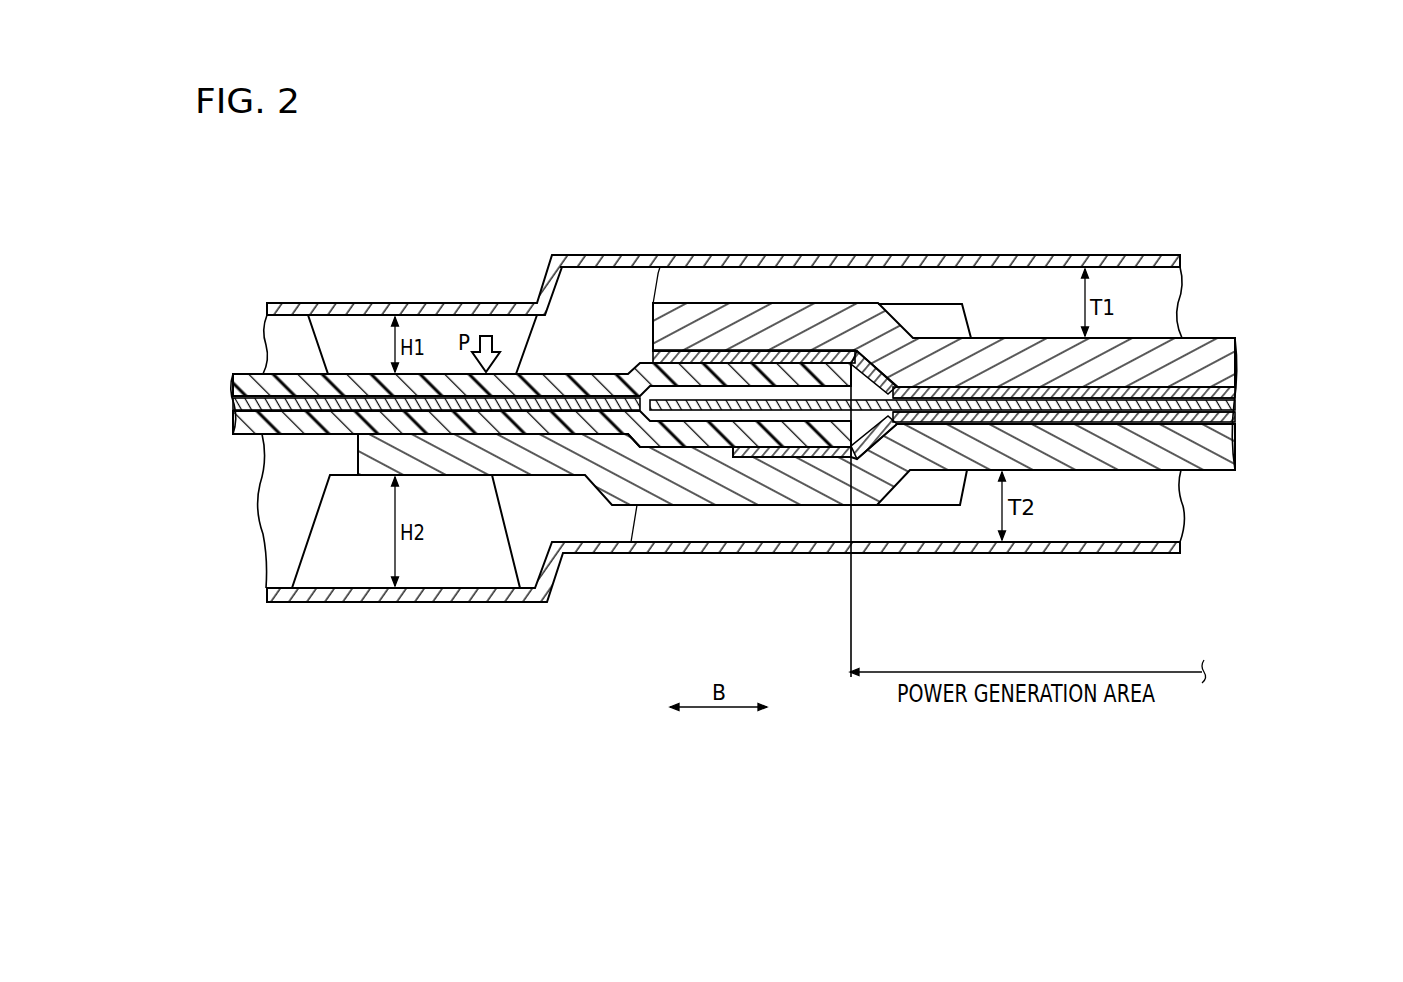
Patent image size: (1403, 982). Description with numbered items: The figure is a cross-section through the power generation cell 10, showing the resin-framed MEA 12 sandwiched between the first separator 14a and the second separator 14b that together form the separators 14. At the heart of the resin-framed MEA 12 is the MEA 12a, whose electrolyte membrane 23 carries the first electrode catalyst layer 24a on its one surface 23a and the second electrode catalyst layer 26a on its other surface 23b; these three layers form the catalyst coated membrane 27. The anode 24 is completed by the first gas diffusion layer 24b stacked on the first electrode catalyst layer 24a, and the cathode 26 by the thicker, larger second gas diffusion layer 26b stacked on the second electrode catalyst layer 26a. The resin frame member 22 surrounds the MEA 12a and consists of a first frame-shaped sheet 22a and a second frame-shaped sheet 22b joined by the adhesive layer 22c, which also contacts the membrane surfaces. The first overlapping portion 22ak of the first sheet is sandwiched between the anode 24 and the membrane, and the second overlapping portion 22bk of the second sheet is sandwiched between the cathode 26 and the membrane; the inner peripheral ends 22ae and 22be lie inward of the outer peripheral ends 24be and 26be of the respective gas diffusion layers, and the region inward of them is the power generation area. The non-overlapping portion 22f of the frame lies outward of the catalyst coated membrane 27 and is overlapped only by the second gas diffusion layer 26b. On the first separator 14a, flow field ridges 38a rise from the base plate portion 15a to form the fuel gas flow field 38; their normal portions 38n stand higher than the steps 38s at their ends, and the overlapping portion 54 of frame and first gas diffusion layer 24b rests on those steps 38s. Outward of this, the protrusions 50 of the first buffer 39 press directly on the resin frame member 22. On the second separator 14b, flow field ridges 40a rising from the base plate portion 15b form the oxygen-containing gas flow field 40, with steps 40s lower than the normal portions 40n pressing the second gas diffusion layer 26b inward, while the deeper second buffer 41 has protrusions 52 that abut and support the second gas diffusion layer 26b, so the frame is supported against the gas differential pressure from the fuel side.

The power generation cell 10 is at (250, 222).
The resin-framed MEA 12 is at (782, 416).
The MEA 12a is at (782, 416).
The separator 14 is at (723, 412).
The first separator 14a is at (940, 254).
The second separator 14b is at (443, 603).
The base plate portion 15a is at (689, 255).
The base plate portion 15b is at (670, 553).
The resin frame member 22 is at (566, 413).
The first frame-shaped sheet 22a is at (240, 383).
The second frame-shaped sheet 22b is at (240, 417).
The adhesive layer 22c is at (240, 404).
The non-overlapping portion 22f is at (440, 383).
The first overlapping portion 22ak is at (756, 372).
The second overlapping portion 22bk is at (727, 438).
The inner peripheral end 22ae is at (868, 370).
The inner peripheral end 22be is at (847, 443).
The electrolyte membrane 23 is at (1237, 403).
The one surface 23a is at (1026, 396).
The other surface 23b is at (1153, 412).
The anode 24 is at (972, 300).
The first electrode catalyst layer 24a is at (1230, 392).
The first gas diffusion layer 24b is at (1232, 352).
The outer peripheral end 24be is at (653, 330).
The cathode 26 is at (757, 458).
The second electrode catalyst layer 26a is at (1230, 415).
The second gas diffusion layer 26b is at (1230, 453).
The outer peripheral end 26be is at (356, 451).
The catalyst coated membrane 27 is at (1153, 386).
The fuel gas flow field 38 is at (926, 253).
The flow field ridges 38a is at (1127, 280).
The normal portions 38n is at (1015, 338).
The steps 38s is at (842, 305).
The first buffer 39 is at (320, 362).
The oxygen-containing gas flow field 40 is at (931, 542).
The flow field ridges 40a is at (1122, 530).
The normal portions 40n is at (1093, 472).
The steps 40s is at (860, 505).
The second buffer 41 is at (308, 535).
The protrusions 50 is at (330, 355).
The protrusions 52 is at (315, 550).
The overlapping portion 54 is at (775, 330).